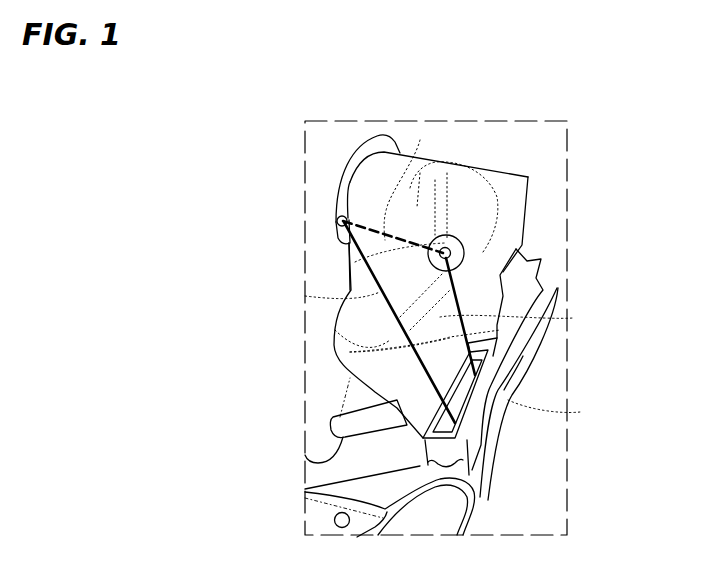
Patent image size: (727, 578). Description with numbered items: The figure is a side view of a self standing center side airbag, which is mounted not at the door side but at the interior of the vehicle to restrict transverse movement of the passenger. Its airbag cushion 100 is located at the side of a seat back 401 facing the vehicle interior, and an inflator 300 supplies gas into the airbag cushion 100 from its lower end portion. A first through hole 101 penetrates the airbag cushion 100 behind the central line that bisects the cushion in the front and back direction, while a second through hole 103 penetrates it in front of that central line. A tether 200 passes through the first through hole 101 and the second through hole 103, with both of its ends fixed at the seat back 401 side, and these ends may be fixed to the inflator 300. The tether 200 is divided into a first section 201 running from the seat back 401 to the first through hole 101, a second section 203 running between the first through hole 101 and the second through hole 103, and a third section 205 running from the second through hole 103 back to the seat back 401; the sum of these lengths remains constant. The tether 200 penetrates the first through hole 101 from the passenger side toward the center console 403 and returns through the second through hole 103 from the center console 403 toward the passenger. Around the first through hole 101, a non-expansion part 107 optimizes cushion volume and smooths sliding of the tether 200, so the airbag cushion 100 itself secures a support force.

The airbag cushion 100 is at (512, 210).
The first through hole 101 is at (465, 243).
The second through hole 103 is at (338, 220).
The non-expansion part 107 is at (350, 253).
The tether 200 is at (368, 283).
The first section 201 is at (545, 319).
The second section 203 is at (406, 175).
The third section 205 is at (350, 352).
The inflator 300 is at (580, 412).
The seat back 401 is at (512, 383).
The center console 403 is at (332, 416).